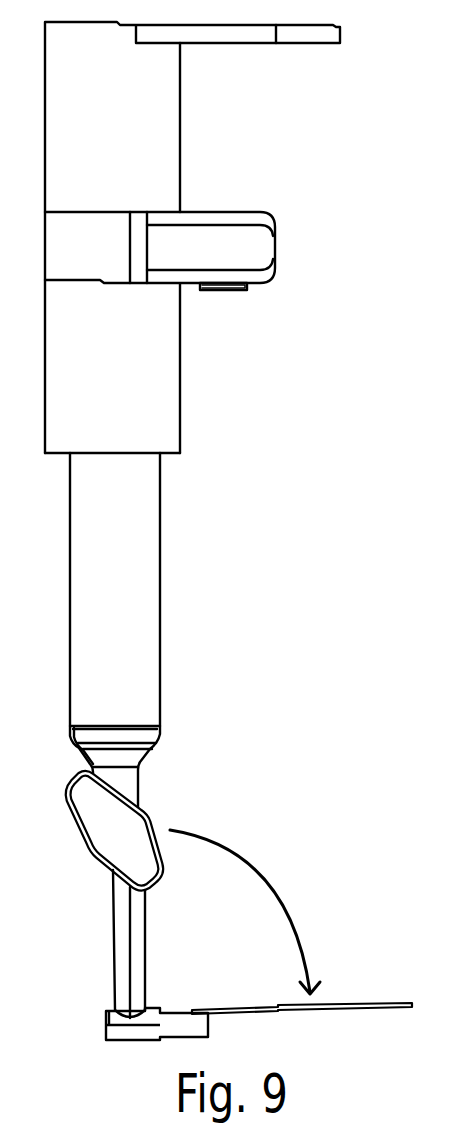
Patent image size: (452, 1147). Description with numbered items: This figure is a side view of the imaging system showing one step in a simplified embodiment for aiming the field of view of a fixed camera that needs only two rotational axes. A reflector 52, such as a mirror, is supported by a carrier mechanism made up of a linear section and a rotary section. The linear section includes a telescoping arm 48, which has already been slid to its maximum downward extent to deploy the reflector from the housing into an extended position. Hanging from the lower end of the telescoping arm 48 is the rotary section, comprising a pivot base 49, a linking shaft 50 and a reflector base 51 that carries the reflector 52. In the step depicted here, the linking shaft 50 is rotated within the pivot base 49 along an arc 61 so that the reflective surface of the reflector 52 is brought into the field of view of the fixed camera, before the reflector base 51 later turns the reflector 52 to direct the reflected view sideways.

The telescoping arm 48 is at (80, 625).
The pivot base 49 is at (75, 823).
The linking shaft 50 is at (112, 945).
The reflector base 51 is at (123, 1043).
The reflector 52 is at (360, 1012).
The arc 61 is at (268, 882).